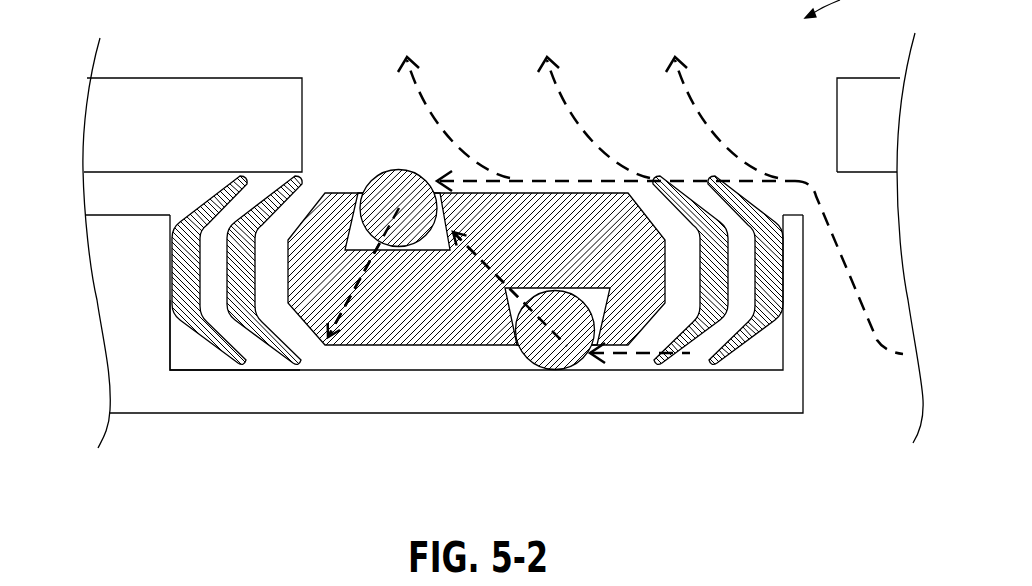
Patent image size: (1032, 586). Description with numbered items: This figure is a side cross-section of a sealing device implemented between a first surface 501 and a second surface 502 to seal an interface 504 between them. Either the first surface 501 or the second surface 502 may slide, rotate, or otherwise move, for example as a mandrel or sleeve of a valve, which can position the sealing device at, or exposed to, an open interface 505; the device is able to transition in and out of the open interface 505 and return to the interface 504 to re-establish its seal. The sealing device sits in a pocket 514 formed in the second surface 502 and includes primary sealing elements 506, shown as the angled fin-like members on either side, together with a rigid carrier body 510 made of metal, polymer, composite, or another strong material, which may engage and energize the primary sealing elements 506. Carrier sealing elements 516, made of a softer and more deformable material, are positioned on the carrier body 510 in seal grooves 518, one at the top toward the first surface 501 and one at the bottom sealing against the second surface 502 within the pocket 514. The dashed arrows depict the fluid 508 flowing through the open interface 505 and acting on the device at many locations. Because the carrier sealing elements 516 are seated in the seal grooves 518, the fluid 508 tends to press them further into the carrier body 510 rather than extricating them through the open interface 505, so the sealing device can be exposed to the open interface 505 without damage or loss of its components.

The first surface 501 is at (492, 125).
The second surface 502 is at (456, 314).
The interface 504 is at (118, 188).
The open interface 505 is at (596, 210).
The primary sealing elements 506 is at (299, 388).
The fluid 508 is at (876, 340).
The carrier body 510 is at (563, 196).
The pocket 514 is at (167, 347).
The carrier sealing elements 516 is at (392, 176).
The seal grooves 518 is at (413, 270).